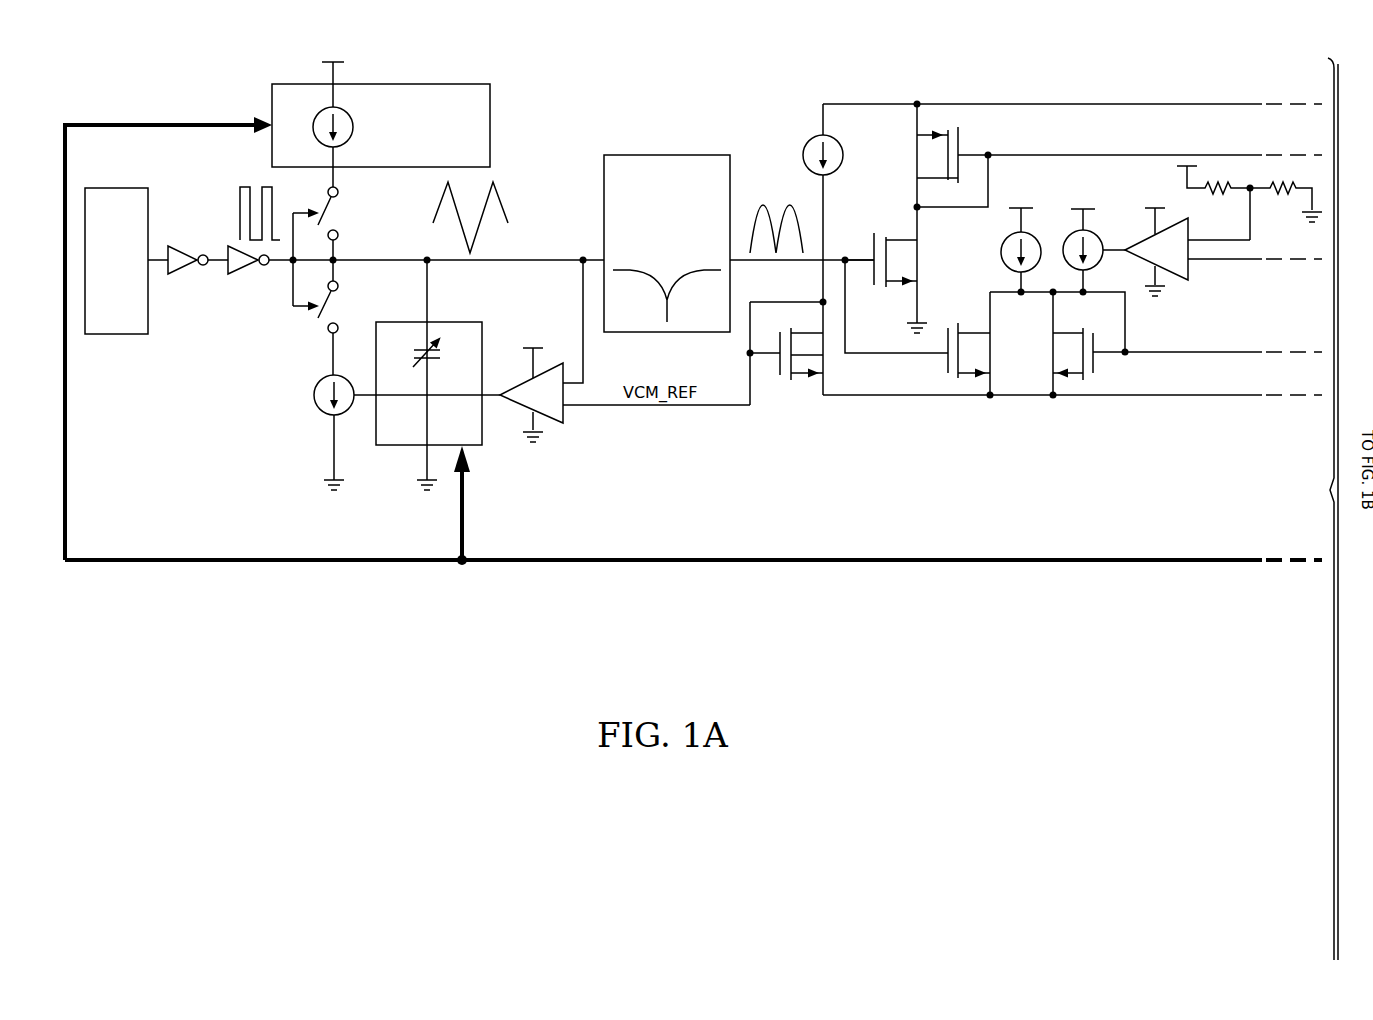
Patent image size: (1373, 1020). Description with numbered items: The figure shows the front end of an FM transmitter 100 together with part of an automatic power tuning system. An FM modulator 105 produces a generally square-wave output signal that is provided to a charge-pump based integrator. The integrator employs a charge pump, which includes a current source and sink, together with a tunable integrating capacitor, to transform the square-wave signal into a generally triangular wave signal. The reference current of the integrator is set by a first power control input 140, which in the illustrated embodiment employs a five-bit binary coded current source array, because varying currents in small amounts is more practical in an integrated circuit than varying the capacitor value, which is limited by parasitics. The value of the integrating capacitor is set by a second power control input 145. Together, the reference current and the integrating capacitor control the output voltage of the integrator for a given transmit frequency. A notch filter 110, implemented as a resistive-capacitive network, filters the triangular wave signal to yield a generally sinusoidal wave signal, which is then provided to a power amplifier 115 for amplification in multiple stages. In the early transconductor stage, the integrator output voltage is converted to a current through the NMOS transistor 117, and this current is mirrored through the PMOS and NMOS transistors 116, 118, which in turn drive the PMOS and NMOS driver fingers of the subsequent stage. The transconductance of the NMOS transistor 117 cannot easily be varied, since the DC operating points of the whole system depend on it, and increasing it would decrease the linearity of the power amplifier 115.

The FM transmitter 100 is at (480, 645).
The FM modulator 105 is at (115, 188).
The notch filter 110 is at (667, 155).
The power amplifier 115 is at (846, 463).
The PMOS transistor 116 is at (960, 141).
The NMOS transistor 117 is at (872, 250).
The NMOS transistor 118 is at (946, 365).
The Power Control-1 140 is at (272, 100).
The Power Control-2 145 is at (395, 447).